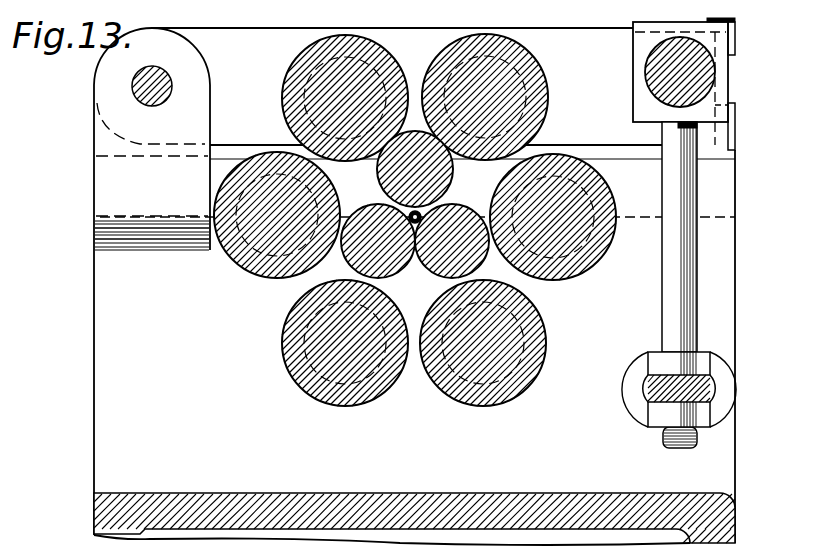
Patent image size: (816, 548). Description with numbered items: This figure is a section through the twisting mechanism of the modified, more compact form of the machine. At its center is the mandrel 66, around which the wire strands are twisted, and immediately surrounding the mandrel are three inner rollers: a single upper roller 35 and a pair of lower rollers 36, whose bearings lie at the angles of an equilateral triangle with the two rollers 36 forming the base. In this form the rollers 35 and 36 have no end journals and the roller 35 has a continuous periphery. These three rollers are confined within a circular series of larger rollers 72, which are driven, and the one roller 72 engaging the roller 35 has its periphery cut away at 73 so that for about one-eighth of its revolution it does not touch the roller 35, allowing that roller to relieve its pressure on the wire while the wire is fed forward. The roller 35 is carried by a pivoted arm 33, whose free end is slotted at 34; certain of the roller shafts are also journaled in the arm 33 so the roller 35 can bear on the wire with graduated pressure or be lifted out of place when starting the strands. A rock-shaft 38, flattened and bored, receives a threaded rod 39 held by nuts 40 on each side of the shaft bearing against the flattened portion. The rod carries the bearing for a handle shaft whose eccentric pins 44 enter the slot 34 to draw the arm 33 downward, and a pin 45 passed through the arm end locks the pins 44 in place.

The arm 33 is at (414, 286).
The slot 34 is at (735, 57).
The roller 35 is at (381, 173).
The roller 36 is at (440, 277).
The rock-shaft 38 is at (714, 386).
The rod 39 is at (690, 270).
The nut 40 is at (710, 416).
The pin 44 is at (716, 96).
The pin 45 is at (738, 21).
The mandrel 66 is at (450, 212).
The roller 72 is at (290, 83).
The cut-away portion 73 is at (470, 151).